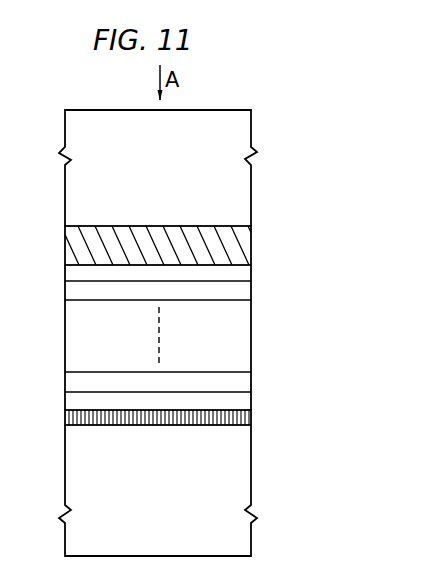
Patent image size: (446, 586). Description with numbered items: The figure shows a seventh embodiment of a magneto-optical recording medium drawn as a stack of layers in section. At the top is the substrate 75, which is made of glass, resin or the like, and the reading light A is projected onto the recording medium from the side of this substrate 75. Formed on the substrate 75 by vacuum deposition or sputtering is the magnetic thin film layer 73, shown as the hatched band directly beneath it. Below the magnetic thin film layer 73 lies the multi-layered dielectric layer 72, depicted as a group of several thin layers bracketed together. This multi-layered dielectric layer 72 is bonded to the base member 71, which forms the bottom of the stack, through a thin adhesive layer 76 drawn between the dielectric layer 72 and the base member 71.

The base member 71 is at (243, 462).
The multi-layered dielectric layer 72 is at (254, 265).
The magnetic thin film layer 73 is at (246, 247).
The substrate 75 is at (246, 186).
The adhesive layer 76 is at (247, 415).